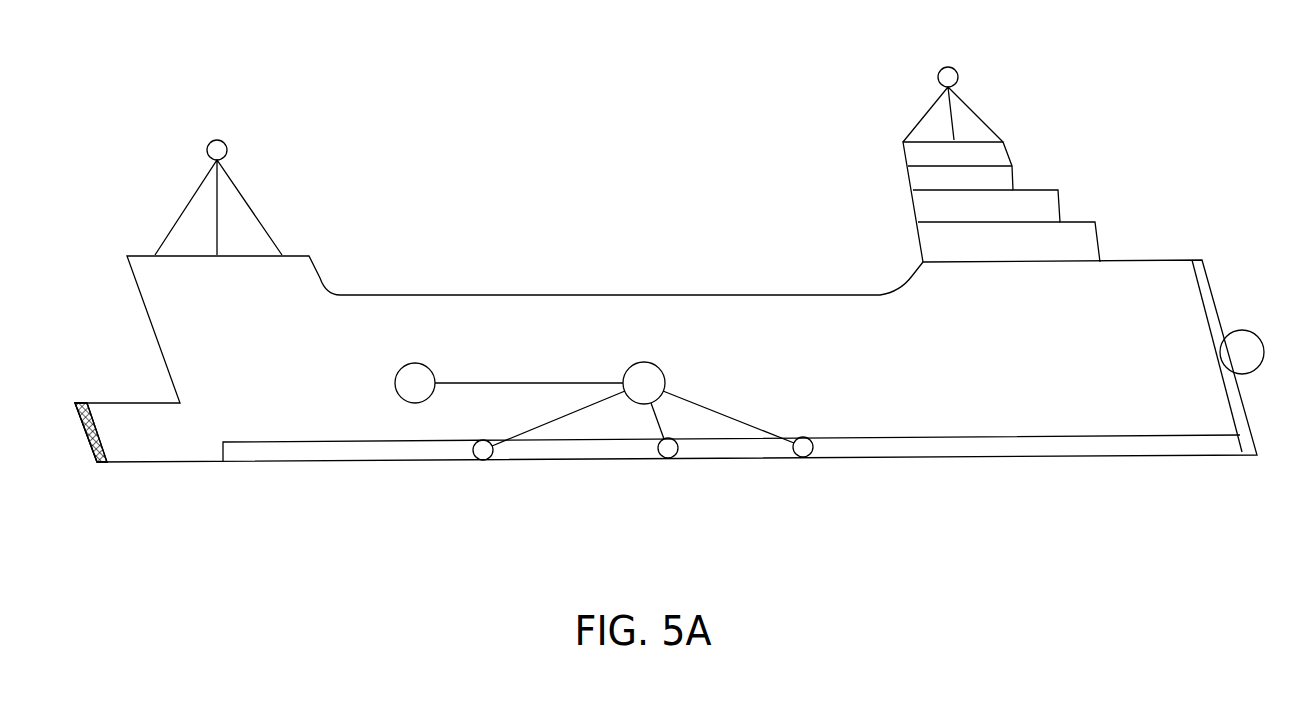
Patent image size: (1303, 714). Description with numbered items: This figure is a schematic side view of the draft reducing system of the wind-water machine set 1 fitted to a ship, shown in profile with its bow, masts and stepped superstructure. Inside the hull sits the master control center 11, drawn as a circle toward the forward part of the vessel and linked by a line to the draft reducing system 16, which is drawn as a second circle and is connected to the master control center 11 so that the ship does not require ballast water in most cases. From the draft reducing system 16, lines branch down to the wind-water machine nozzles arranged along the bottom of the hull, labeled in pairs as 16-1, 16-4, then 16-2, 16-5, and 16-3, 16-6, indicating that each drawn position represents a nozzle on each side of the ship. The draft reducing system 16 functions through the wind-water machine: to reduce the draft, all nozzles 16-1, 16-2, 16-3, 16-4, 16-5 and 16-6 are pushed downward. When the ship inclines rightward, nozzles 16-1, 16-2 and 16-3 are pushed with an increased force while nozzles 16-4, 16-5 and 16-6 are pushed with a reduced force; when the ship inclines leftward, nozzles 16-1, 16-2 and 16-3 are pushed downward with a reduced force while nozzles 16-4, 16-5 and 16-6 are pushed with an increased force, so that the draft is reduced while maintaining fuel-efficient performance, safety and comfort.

The wind-water machine set 1 is at (347, 46).
The master control center 11 is at (415, 363).
The draft reducing system 16 is at (643, 362).
The wind-water machine nozzle 16-1 is at (483, 450).
The wind-water machine nozzle 16-2 is at (668, 448).
The wind-water machine nozzle 16-3 is at (803, 447).
The wind-water machine nozzle 16-4 is at (483, 450).
The wind-water machine nozzle 16-5 is at (668, 448).
The wind-water machine nozzle 16-6 is at (803, 447).